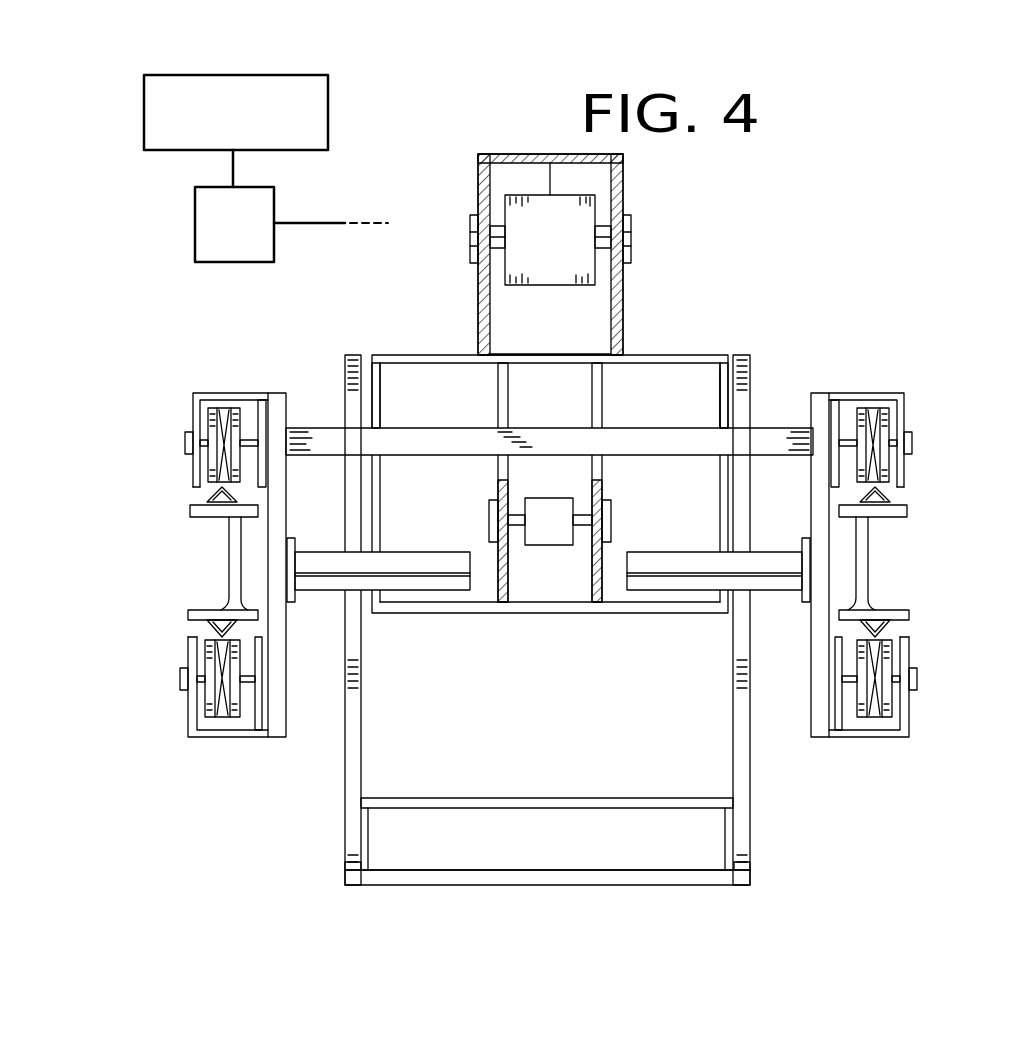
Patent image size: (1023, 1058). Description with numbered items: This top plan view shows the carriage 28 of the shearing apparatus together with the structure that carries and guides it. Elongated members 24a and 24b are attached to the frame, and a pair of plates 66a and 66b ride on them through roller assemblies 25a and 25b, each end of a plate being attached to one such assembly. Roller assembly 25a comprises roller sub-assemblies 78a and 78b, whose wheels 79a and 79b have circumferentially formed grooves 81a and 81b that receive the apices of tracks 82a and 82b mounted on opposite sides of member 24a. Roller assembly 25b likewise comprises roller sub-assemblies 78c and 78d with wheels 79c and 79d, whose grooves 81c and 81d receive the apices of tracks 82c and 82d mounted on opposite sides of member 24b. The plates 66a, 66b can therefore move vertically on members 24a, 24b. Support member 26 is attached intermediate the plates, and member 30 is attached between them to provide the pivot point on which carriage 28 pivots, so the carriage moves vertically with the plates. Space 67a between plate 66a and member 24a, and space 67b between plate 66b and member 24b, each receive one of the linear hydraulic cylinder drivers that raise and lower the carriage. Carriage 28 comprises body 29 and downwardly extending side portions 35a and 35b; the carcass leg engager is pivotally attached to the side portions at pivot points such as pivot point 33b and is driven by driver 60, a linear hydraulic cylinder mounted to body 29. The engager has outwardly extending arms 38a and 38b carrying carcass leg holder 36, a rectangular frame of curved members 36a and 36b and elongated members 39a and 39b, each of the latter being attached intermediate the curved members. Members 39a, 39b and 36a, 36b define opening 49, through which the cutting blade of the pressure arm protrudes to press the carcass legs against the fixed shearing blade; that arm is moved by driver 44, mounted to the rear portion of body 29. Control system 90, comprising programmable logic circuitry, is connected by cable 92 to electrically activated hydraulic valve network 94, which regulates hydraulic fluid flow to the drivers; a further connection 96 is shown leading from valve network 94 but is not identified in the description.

The control system 90 is at (258, 130).
The cable 92 is at (236, 166).
The hydraulic valve network 94 is at (253, 238).
The connection line 96 is at (303, 225).
The driver 44 is at (570, 218).
The carriage 28 is at (650, 350).
The body 29 is at (576, 352).
The support member 26 is at (456, 437).
The driver 60 is at (553, 530).
The pivot point 33b is at (722, 394).
The side portion 35a is at (383, 378).
The side portion 35b is at (734, 378).
The arm 38a is at (356, 354).
The arm 38b is at (745, 352).
The elongated member 39a is at (605, 880).
The elongated member 39b is at (472, 803).
The opening 49 is at (551, 851).
The carcass leg holder 36 is at (480, 882).
The curved member 36a is at (345, 864).
The curved member 36b is at (752, 868).
The member 30 is at (333, 592).
The roller assembly 25a is at (192, 384).
The roller assembly 25b is at (894, 362).
The plate 66a is at (278, 392).
The plate 66b is at (829, 392).
The roller sub-assembly 78a is at (190, 413).
The roller sub-assembly 78b is at (186, 656).
The roller sub-assembly 78c is at (908, 400).
The roller sub-assembly 78d is at (913, 663).
The groove 81a is at (227, 406).
The groove 81b is at (220, 720).
The groove 81c is at (868, 406).
The groove 81d is at (873, 720).
The wheel 79a is at (212, 462).
The wheel 79b is at (212, 694).
The wheel 79c is at (884, 428).
The wheel 79d is at (884, 690).
The track 82a is at (208, 490).
The track 82b is at (208, 634).
The track 82c is at (892, 497).
The track 82d is at (893, 640).
The space 67a is at (240, 538).
The space 67b is at (869, 571).
The elongated member 24a is at (232, 566).
The elongated member 24b is at (875, 548).